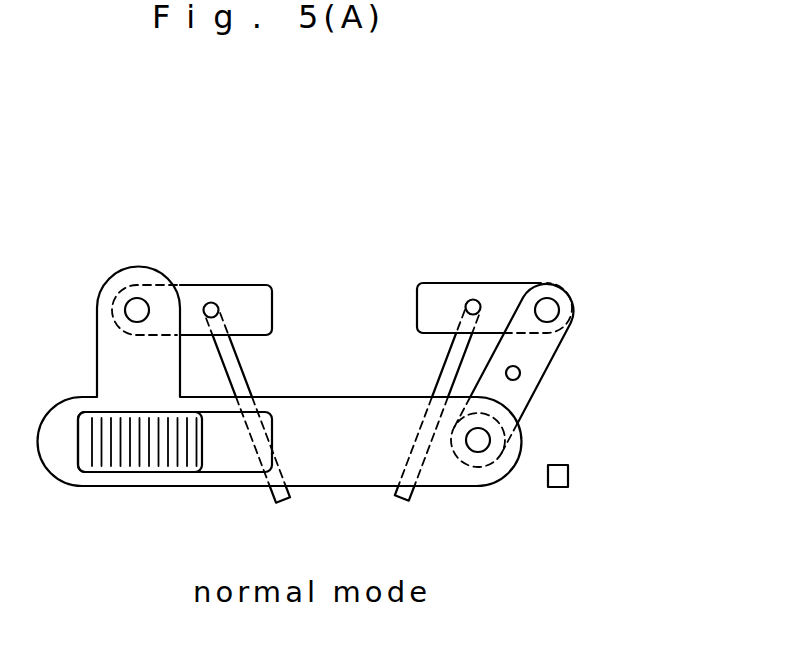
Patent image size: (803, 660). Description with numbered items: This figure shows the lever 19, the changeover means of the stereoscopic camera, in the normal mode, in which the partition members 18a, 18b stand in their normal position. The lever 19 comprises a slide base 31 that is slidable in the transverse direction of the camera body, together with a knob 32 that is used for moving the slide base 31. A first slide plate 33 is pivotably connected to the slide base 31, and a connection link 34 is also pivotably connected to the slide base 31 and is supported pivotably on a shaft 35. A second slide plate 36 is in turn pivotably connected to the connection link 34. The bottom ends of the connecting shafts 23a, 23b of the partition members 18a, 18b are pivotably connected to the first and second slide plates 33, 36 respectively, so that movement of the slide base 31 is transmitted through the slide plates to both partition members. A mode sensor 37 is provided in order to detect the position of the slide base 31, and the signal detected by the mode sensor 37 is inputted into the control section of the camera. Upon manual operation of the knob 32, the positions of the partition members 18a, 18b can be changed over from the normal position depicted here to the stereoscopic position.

The lever 19 is at (325, 152).
The slide base 31 is at (167, 477).
The knob 32 is at (127, 455).
The first slide plate 33 is at (195, 290).
The connecting shaft 23a is at (217, 306).
The partition member 18a is at (240, 372).
The partition member 18b is at (451, 366).
The connecting shaft 23b is at (469, 300).
The second slide plate 36 is at (488, 288).
The connection link 34 is at (544, 342).
The shaft 35 is at (519, 378).
The mode sensor 37 is at (570, 478).